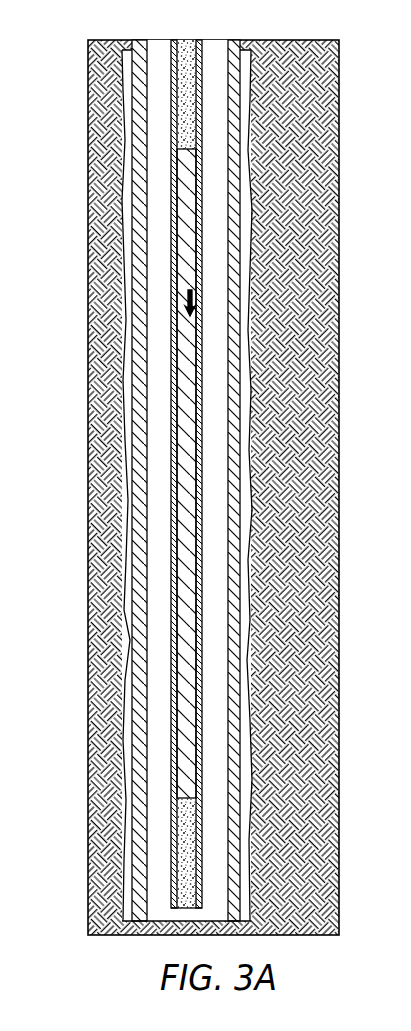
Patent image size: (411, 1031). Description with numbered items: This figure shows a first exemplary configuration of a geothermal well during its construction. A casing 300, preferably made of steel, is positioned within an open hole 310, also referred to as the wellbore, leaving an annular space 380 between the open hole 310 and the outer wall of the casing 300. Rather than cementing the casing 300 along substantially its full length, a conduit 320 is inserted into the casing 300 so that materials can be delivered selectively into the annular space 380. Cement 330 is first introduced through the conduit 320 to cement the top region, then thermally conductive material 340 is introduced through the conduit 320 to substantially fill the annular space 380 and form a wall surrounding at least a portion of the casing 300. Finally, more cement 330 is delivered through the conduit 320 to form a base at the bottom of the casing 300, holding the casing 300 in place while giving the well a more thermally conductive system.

The open hole 310 is at (96, 126).
The casing 300 is at (132, 218).
The conduit 320 is at (172, 276).
The annular space 380 is at (125, 417).
The thermally conductive material 340 is at (176, 588).
The cement 330 is at (203, 62).